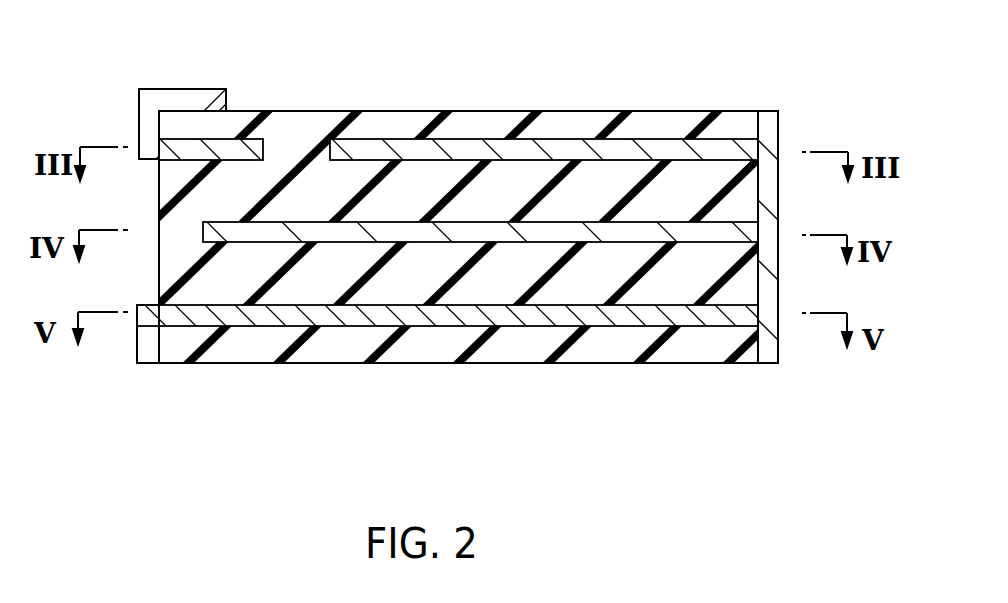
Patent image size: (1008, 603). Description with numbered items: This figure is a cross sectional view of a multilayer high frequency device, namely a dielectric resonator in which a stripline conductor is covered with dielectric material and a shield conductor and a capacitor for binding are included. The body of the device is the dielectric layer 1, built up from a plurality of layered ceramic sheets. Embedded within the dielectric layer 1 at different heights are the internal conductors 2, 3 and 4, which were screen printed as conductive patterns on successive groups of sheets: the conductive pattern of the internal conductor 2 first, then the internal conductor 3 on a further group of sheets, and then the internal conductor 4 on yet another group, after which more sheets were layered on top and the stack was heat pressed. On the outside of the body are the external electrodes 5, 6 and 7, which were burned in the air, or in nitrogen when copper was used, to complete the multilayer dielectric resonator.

The dielectric layer 1 is at (732, 293).
The internal conductor 2 is at (390, 318).
The internal conductor 3 is at (567, 232).
The internal conductor 4 is at (249, 150).
The external electrode 5 is at (194, 89).
The external electrode 6 is at (145, 343).
The external electrode 7 is at (770, 122).